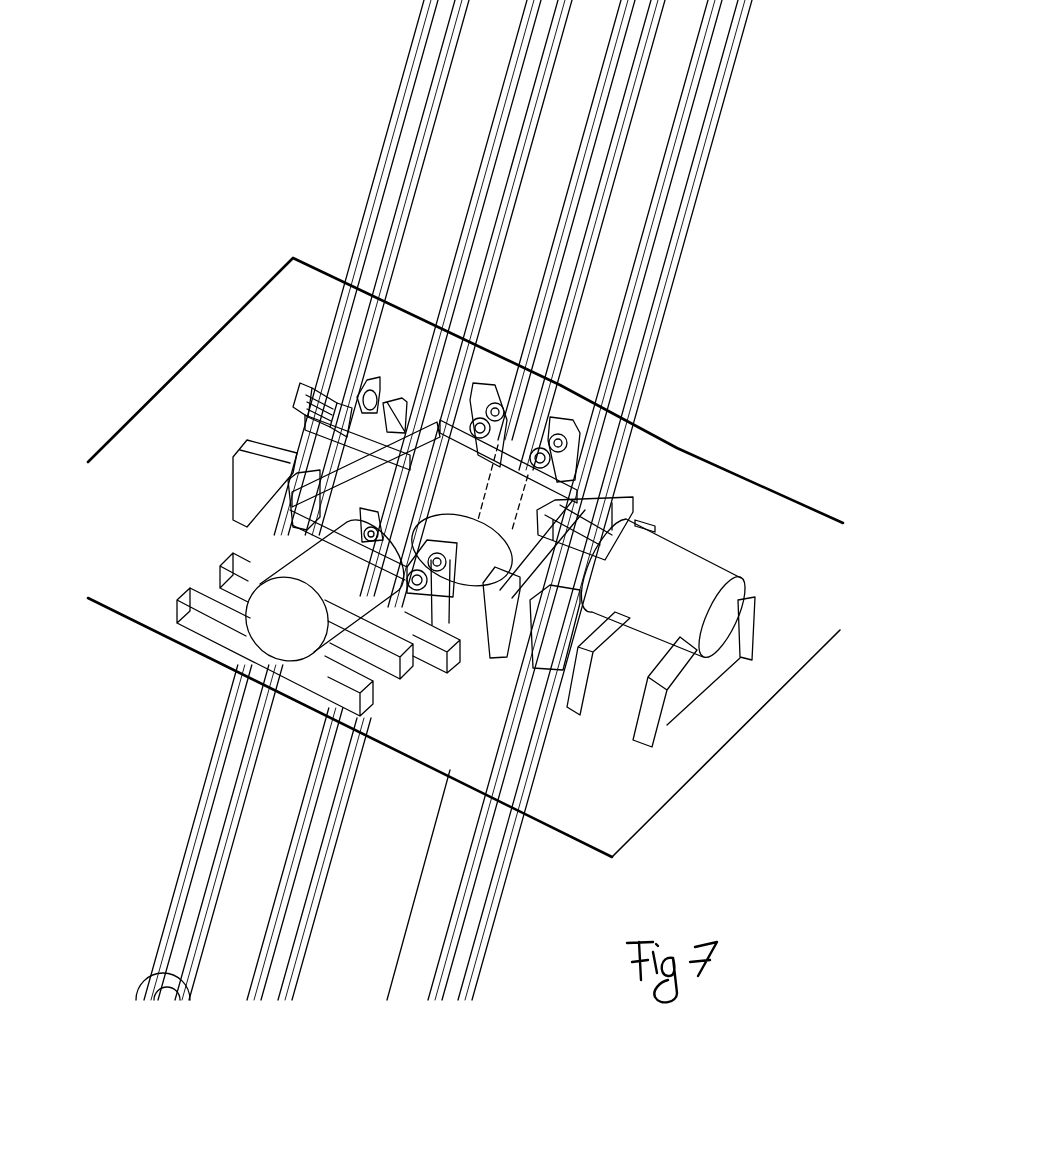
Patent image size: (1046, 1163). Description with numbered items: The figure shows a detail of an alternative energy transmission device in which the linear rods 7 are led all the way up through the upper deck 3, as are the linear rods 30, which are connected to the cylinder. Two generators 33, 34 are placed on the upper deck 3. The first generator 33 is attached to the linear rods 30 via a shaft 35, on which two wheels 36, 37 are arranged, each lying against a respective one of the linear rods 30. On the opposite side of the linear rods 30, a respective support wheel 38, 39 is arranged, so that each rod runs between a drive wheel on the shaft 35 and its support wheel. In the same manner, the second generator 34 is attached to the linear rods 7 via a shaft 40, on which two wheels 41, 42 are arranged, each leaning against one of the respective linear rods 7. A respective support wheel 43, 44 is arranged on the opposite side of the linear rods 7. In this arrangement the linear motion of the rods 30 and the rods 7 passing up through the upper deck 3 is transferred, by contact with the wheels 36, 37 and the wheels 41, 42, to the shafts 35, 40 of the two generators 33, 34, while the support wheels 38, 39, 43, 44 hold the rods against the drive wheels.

The upper deck 3 is at (617, 835).
The linear rods 7 is at (222, 805).
The linear rods 30 is at (303, 885).
The first generator 33 is at (333, 622).
The second generator 34 is at (703, 567).
The shaft 35 is at (485, 382).
The wheel 36 is at (358, 522).
The wheel 37 is at (507, 420).
The support wheel 38 is at (565, 456).
The support wheel 39 is at (470, 605).
The shaft 40 is at (397, 397).
The wheel 41 is at (300, 427).
The wheel 42 is at (505, 605).
The support wheel 43 is at (362, 388).
The support wheel 44 is at (628, 500).